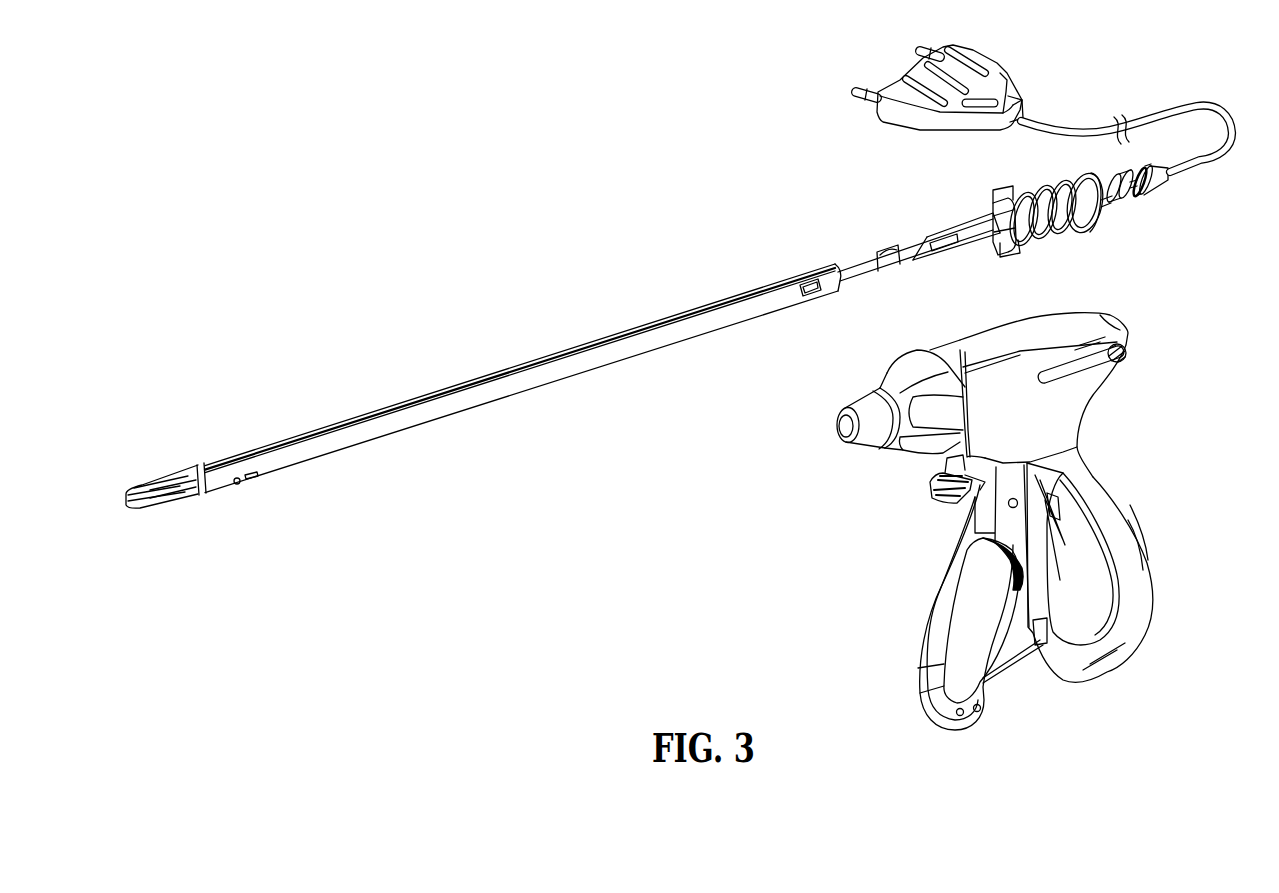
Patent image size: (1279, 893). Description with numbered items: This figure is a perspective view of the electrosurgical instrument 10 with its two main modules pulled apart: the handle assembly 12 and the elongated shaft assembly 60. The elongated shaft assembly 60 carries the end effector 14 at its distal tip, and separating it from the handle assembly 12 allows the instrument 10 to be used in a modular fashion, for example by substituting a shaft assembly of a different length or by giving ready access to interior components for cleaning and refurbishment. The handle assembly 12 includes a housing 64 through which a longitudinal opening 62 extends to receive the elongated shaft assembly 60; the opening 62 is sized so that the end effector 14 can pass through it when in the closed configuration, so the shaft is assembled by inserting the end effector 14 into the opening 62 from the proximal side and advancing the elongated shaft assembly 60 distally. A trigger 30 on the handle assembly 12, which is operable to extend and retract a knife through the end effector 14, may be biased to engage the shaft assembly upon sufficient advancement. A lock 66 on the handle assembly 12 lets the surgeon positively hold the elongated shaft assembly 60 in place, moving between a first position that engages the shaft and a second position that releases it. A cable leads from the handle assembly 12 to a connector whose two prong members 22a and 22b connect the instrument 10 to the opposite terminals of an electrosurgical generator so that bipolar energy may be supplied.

The electrosurgical instrument 10 is at (360, 310).
The handle assembly 12 is at (1165, 445).
The end effector 14 is at (170, 452).
The prong member 22a is at (937, 47).
The prong member 22b is at (860, 90).
The trigger 30 is at (905, 490).
The elongated shaft assembly 60 is at (585, 335).
The longitudinal opening 62 is at (833, 431).
The housing 64 is at (1003, 340).
The lock 66 is at (1124, 352).